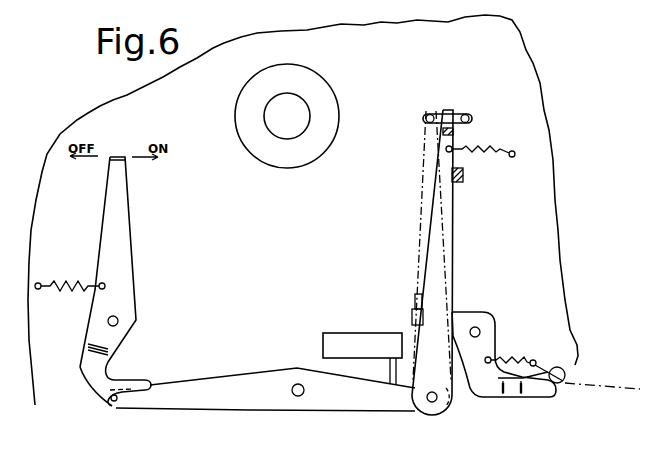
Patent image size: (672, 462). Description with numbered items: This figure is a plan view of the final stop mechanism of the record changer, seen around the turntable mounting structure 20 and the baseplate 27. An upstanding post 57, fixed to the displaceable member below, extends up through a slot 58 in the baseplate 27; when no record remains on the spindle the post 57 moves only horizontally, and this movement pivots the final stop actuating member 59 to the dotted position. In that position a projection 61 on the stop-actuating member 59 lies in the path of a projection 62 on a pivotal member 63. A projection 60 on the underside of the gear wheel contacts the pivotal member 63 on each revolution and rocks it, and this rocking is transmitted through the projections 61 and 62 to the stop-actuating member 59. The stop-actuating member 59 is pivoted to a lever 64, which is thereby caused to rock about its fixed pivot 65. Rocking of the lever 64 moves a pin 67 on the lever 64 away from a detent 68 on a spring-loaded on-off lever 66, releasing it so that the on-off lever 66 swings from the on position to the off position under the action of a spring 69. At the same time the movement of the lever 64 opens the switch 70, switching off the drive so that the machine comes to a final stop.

The turntable mounting structure 20 is at (323, 92).
The baseplate 27 is at (547, 238).
The upstanding post 57 is at (462, 117).
The slot 58 is at (441, 112).
The final stop actuating member 59 is at (440, 187).
The projection 60 is at (567, 372).
The projection 61 is at (416, 300).
The projection 62 is at (412, 320).
The pivotal member 63 is at (490, 338).
The lever 64 is at (263, 371).
The fixed pivot 65 is at (299, 383).
The on-off lever 66 is at (128, 242).
The pin 67 is at (117, 402).
The detent 68 is at (108, 396).
The spring 69 is at (72, 285).
The switch 70 is at (353, 333).